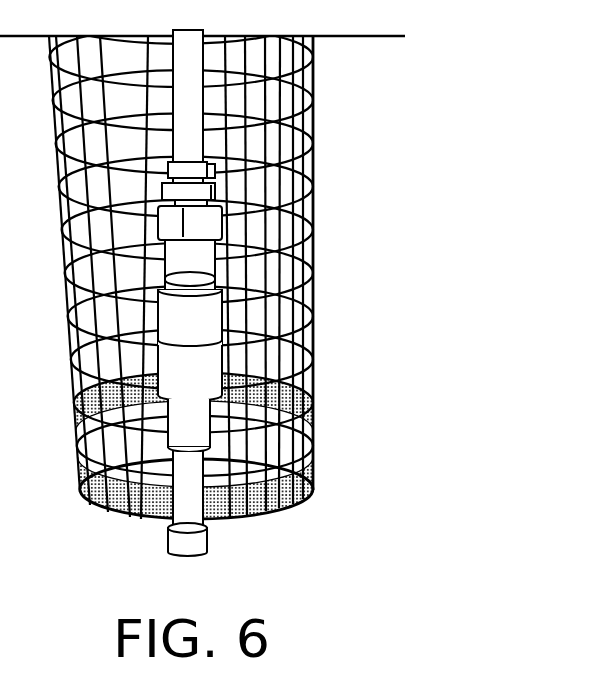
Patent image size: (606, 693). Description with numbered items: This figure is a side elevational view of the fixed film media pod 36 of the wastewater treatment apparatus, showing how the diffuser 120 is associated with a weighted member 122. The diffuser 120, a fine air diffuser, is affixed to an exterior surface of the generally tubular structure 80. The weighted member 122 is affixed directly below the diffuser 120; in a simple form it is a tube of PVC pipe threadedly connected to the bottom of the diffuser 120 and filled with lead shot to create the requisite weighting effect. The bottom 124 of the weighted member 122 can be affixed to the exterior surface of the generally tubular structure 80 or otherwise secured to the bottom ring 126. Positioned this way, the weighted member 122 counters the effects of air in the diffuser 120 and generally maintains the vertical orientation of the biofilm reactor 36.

The generally tubular structure 80 is at (227, 208).
The diffuser 120 is at (200, 307).
The fixed film media pod 36 is at (205, 363).
The weighted member 122 is at (195, 415).
The bottom ring 126 is at (300, 478).
The bottom 124 is at (200, 548).